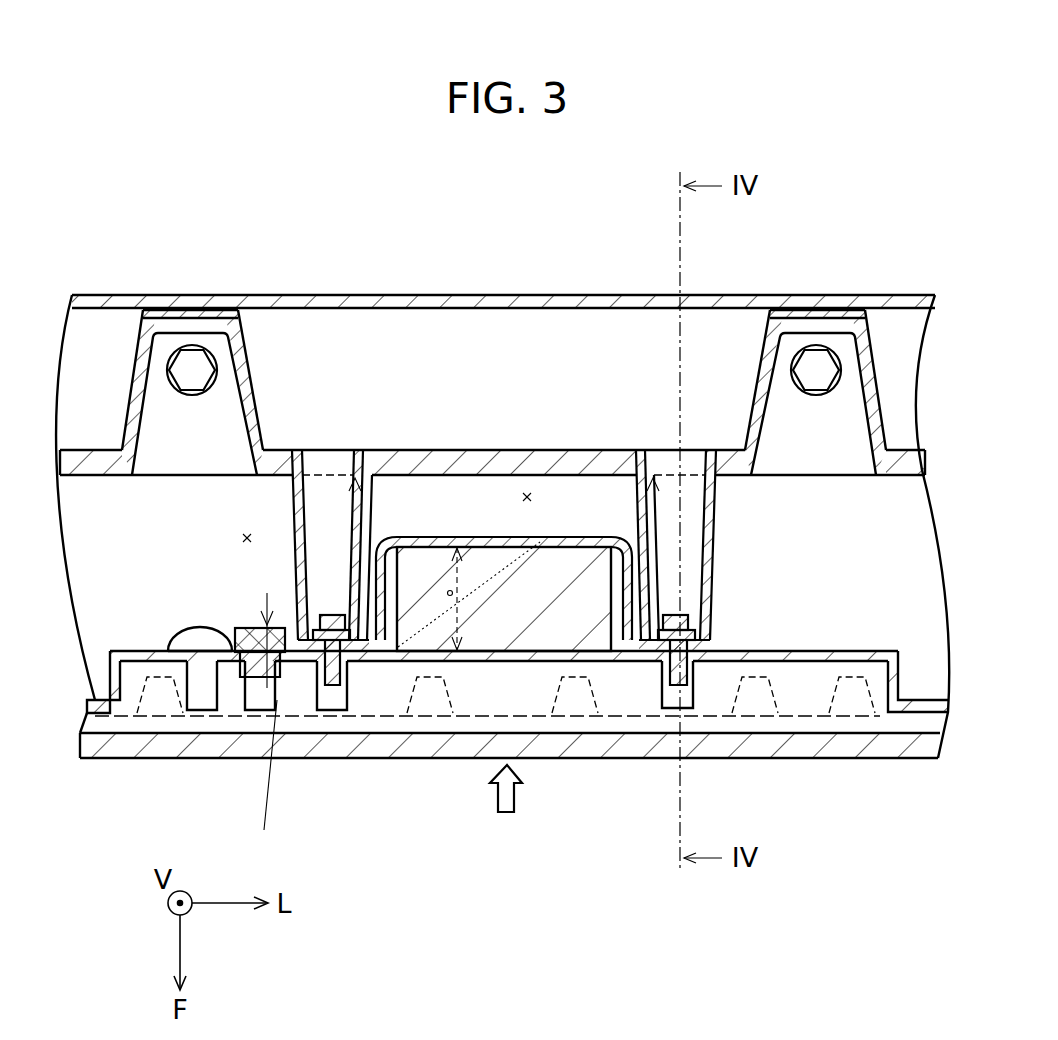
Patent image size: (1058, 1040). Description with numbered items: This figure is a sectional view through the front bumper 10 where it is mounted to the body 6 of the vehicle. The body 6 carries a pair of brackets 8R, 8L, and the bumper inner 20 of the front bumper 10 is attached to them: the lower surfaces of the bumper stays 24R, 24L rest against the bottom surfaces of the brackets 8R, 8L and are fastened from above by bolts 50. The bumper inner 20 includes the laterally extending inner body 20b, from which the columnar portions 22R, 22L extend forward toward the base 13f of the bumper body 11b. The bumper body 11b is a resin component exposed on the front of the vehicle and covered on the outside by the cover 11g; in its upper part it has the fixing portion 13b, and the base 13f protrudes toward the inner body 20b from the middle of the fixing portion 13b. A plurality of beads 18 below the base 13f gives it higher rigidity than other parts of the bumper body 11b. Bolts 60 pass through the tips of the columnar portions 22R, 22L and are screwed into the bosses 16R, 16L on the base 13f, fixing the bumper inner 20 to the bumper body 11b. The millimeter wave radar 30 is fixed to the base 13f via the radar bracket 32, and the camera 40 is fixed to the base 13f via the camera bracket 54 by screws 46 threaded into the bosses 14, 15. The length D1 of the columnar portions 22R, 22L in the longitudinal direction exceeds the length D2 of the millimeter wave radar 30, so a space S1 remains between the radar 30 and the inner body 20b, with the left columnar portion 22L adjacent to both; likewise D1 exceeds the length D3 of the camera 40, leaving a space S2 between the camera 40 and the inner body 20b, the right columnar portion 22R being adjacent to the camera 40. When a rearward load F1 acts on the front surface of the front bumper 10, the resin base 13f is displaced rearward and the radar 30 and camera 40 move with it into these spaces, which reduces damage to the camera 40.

The bolt 50 is at (188, 362).
The bracket 8R is at (177, 312).
The bracket 8L is at (772, 316).
The bolt 60 is at (327, 612).
The length of columnar portion D1 is at (355, 478).
The length of millimeter wave radar D2 is at (450, 590).
The body 6 is at (498, 450).
The inner body 20b is at (527, 296).
The space S1 is at (527, 497).
The bumper inner 20 is at (900, 380).
The columnar portion 22R is at (291, 517).
The columnar portion 22L is at (718, 505).
The bumper stay 24R is at (168, 462).
The bumper stay 24L is at (840, 462).
The space S2 is at (247, 538).
The camera bracket 54 is at (200, 628).
The camera 40 is at (262, 628).
The screw 46 is at (178, 634).
The base 13f is at (833, 655).
The fixing portion 13b is at (106, 716).
The bead 18 is at (158, 714).
The boss 15 is at (200, 698).
The boss 14 is at (257, 698).
The boss 16R is at (325, 700).
The length of camera D3 is at (265, 780).
The millimeter wave radar 30 is at (492, 648).
The radar bracket 32 is at (628, 645).
The boss 16L is at (688, 700).
The cover 11g is at (838, 748).
The bumper body 11b is at (912, 675).
The front bumper 10 is at (358, 788).
The load F1 is at (508, 812).